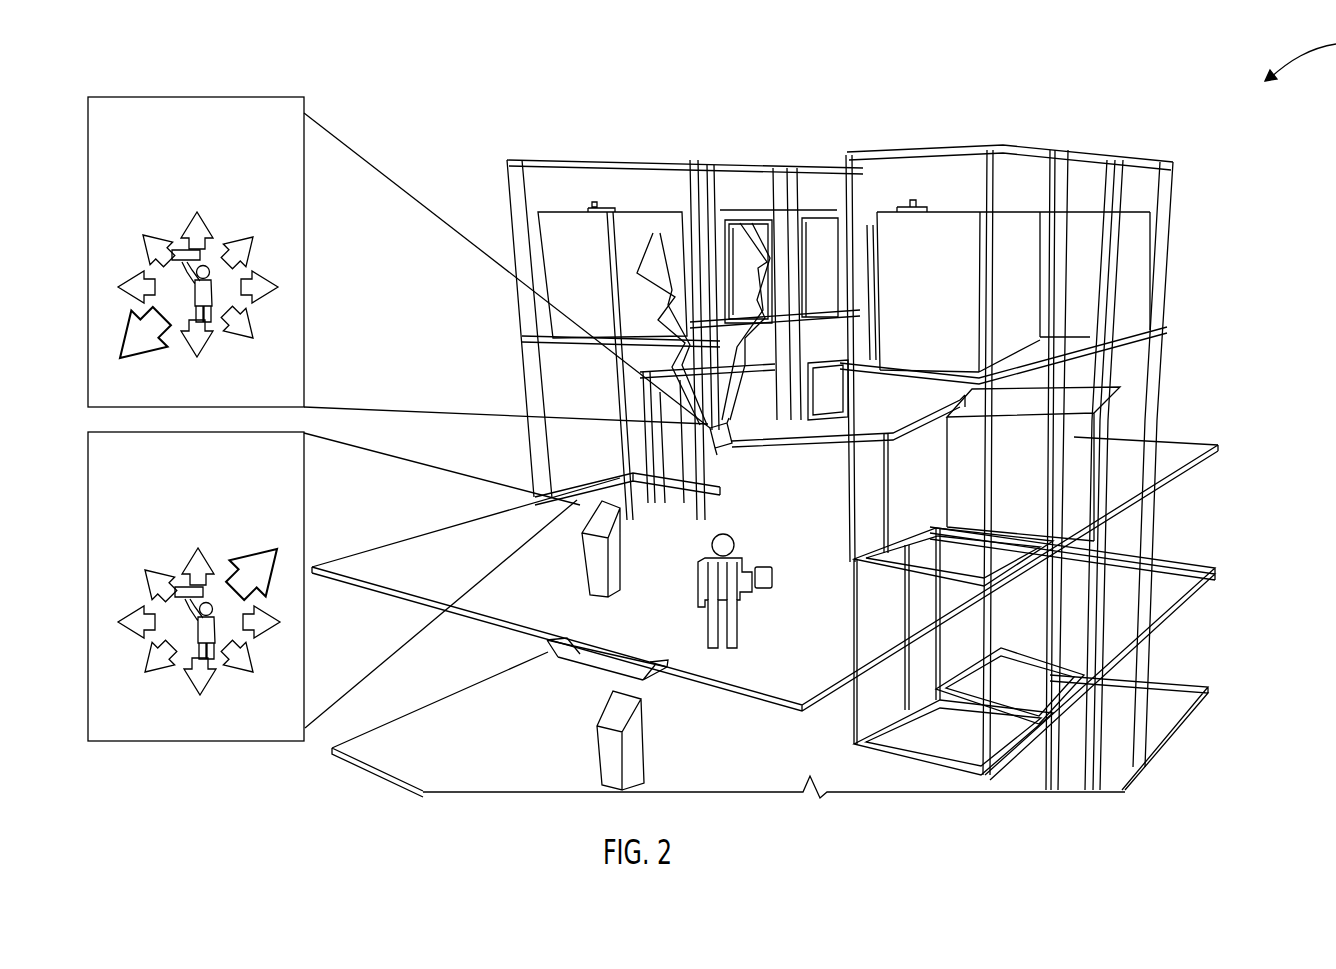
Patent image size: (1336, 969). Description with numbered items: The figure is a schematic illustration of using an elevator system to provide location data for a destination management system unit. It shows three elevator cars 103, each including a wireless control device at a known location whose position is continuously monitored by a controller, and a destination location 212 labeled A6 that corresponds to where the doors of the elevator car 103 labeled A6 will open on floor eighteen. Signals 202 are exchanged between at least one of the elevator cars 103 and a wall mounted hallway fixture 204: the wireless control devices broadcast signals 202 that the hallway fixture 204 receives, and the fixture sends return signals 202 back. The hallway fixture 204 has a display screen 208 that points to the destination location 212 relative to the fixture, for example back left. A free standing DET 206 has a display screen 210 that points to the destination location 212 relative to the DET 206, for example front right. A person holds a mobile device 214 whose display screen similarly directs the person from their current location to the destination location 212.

The elevator car 103 is at (557, 207).
The signals 202 is at (656, 237).
The wall mounted hallway fixture 204 is at (727, 453).
The free standing DET 206 is at (630, 569).
The display screen 208 is at (305, 315).
The display screen 210 is at (305, 535).
The destination location 212 is at (832, 525).
The mobile device 214 is at (738, 628).